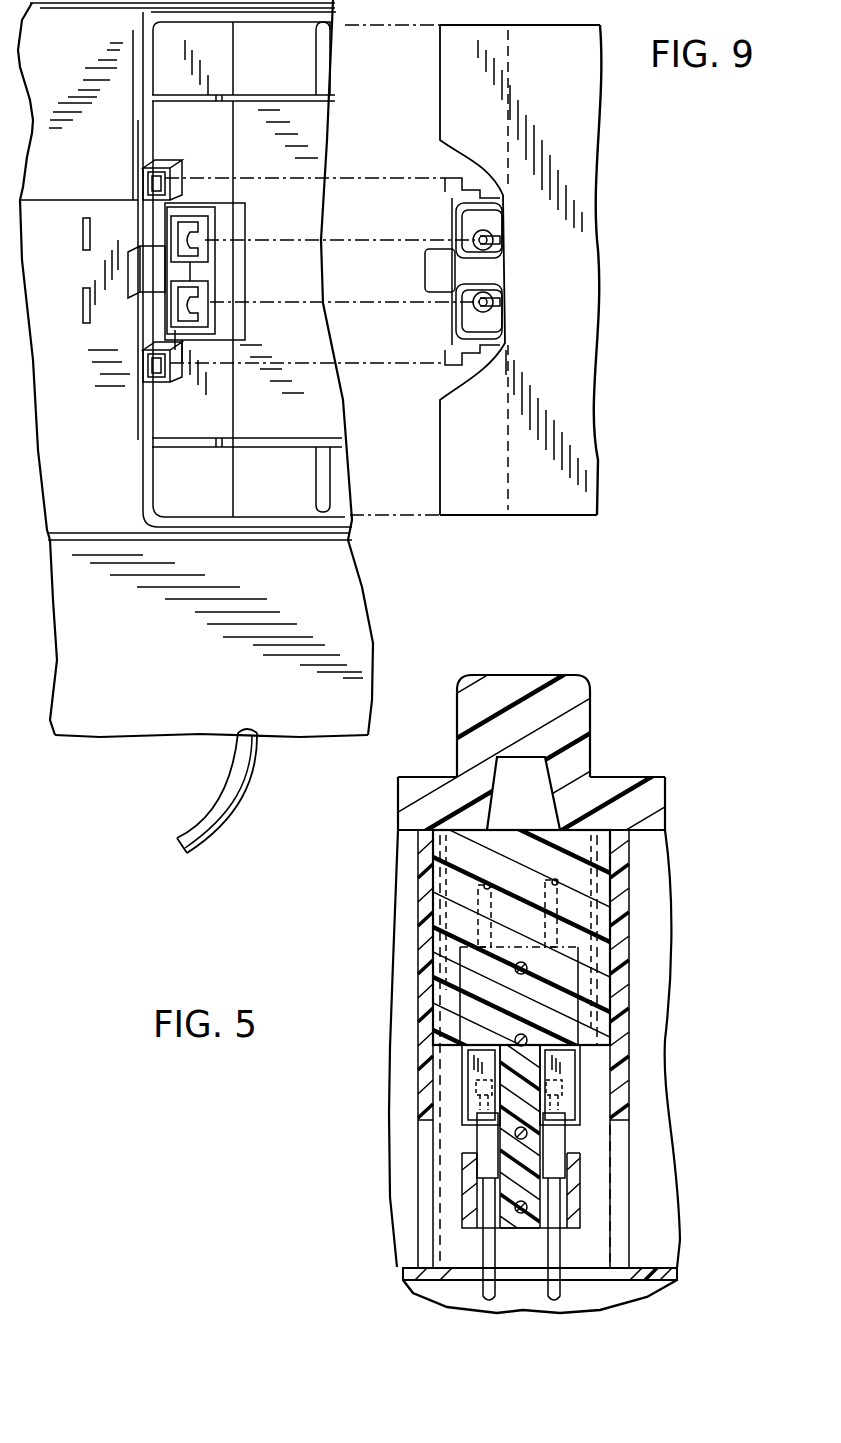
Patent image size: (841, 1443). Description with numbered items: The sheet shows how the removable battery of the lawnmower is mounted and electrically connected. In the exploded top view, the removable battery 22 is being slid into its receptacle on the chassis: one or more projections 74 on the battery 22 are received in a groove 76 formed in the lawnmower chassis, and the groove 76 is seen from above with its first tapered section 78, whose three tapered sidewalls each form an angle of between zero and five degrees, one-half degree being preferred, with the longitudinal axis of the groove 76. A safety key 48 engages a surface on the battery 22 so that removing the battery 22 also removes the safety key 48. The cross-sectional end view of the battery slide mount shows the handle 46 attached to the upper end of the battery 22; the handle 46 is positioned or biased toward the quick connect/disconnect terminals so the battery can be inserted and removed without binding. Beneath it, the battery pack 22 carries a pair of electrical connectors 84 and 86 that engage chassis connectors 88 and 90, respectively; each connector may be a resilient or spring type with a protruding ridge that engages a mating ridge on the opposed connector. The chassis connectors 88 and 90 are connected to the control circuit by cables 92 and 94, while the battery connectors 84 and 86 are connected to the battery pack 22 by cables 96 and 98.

In FIG. 9, the removable battery 22 is at (583, 290).
In FIG. 9, the safety key 48 is at (172, 168).
In FIG. 9, the projection 74 is at (448, 178).
In FIG. 9, the groove 76 is at (118, 354).
In FIG. 9, the first tapered section 78 is at (167, 378).
In FIG. 5, the handle 46 is at (518, 677).
In FIG. 5, the electrical connector 84 is at (479, 1060).
In FIG. 5, the electrical connector 86 is at (556, 1055).
In FIG. 5, the chassis connector 88 is at (492, 1098).
In FIG. 5, the chassis connector 90 is at (560, 1098).
In FIG. 5, the cable 92 is at (487, 1140).
In FIG. 5, the cable 94 is at (553, 1141).
In FIG. 5, the cable 96 is at (487, 903).
In FIG. 5, the cable 98 is at (553, 905).